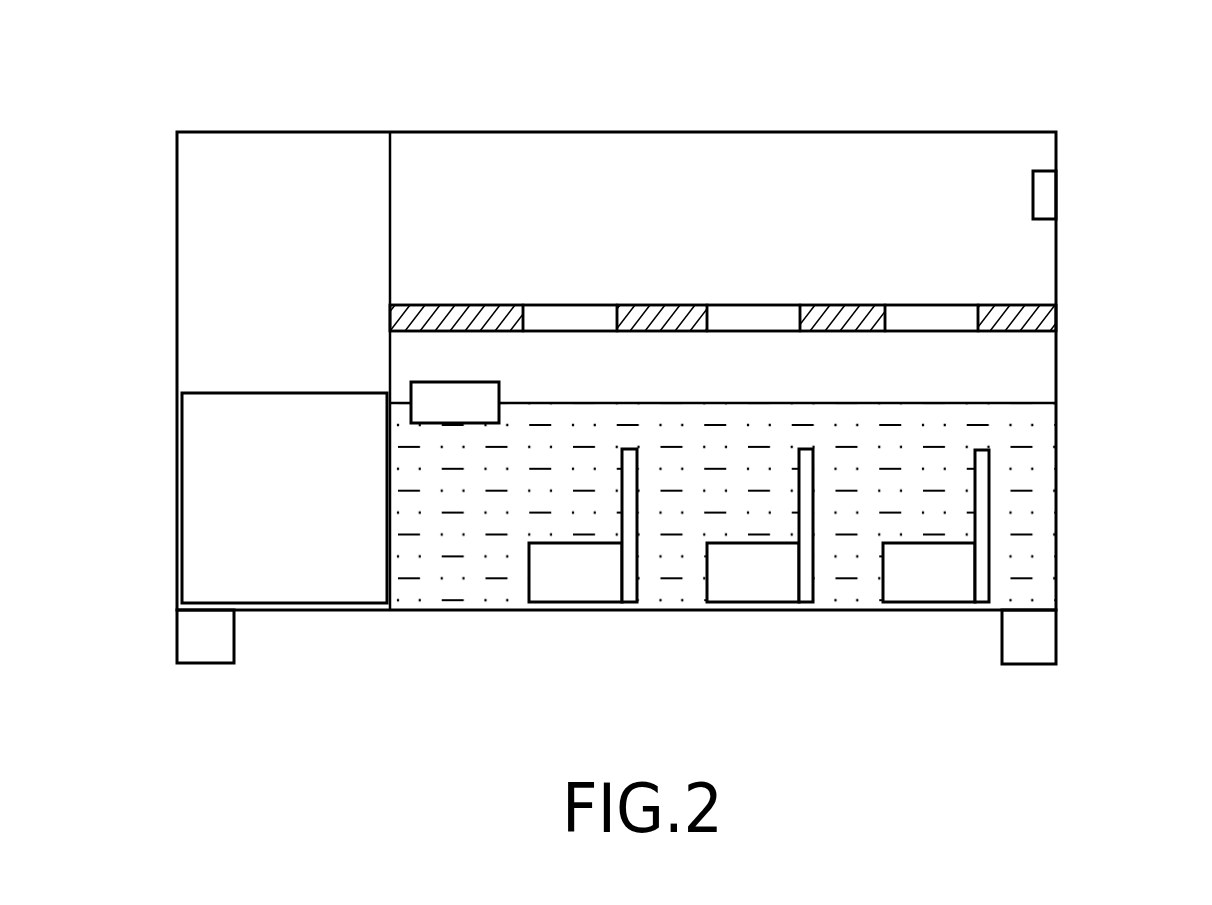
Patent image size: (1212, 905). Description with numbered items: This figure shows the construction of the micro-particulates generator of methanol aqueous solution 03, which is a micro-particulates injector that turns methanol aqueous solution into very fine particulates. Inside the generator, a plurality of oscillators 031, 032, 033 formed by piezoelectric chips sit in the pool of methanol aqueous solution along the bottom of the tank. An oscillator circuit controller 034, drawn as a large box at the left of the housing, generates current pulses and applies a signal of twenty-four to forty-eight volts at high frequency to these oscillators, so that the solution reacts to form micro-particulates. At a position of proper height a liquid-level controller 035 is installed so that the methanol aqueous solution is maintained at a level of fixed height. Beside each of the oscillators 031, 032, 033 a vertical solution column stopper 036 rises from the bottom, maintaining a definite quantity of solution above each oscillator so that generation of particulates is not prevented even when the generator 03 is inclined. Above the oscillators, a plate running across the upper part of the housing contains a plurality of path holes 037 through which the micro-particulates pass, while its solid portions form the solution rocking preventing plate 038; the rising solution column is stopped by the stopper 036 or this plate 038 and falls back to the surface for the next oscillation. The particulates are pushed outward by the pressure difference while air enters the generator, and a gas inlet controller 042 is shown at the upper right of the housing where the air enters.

The micro-particulates generator of methanol aqueous solution 03 is at (259, 132).
The oscillator 031 is at (572, 600).
The oscillator 032 is at (755, 600).
The oscillator 033 is at (928, 596).
The oscillator circuit controller 034 is at (270, 485).
The liquid-level controller 035 is at (411, 383).
The vertical solution column stopper 036 is at (990, 502).
The path hole 037 is at (572, 315).
The solution rocking preventing plate 038 is at (452, 305).
The gas inlet controller 042 is at (1045, 194).